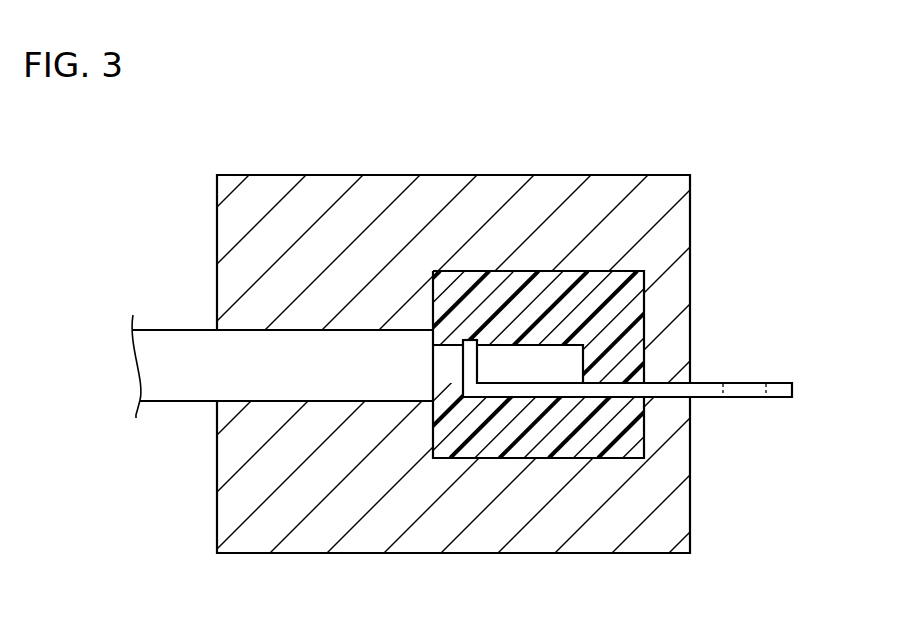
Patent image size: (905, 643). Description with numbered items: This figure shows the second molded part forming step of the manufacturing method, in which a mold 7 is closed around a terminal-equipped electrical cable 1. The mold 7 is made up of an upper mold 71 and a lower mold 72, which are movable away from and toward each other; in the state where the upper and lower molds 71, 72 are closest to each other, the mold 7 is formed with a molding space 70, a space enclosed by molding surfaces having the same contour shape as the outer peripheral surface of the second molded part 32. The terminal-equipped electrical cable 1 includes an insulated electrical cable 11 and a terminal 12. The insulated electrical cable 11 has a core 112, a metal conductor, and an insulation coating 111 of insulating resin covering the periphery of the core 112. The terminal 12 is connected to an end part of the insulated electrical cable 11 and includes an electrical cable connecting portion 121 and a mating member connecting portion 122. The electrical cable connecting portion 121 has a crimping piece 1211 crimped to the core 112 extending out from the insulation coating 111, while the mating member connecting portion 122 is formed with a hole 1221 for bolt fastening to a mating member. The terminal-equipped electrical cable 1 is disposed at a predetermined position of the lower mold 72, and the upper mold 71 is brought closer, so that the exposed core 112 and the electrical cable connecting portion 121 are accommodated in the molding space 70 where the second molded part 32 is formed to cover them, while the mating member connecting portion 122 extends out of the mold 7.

The terminal-equipped electrical cable 1 is at (335, 297).
The insulated electrical cable 11 is at (283, 354).
The insulation coating 111 is at (177, 402).
The core 112 is at (541, 356).
The terminal 12 is at (633, 467).
The electrical cable connecting portion 121 is at (509, 471).
The crimping piece 1211 is at (470, 368).
The mating member connecting portion 122 is at (640, 364).
The hole 1221 is at (757, 382).
The second molded part 32 is at (447, 287).
The mold 7 is at (452, 338).
The molding space 70 is at (642, 446).
The upper mold 71 is at (690, 253).
The lower mold 72 is at (691, 476).